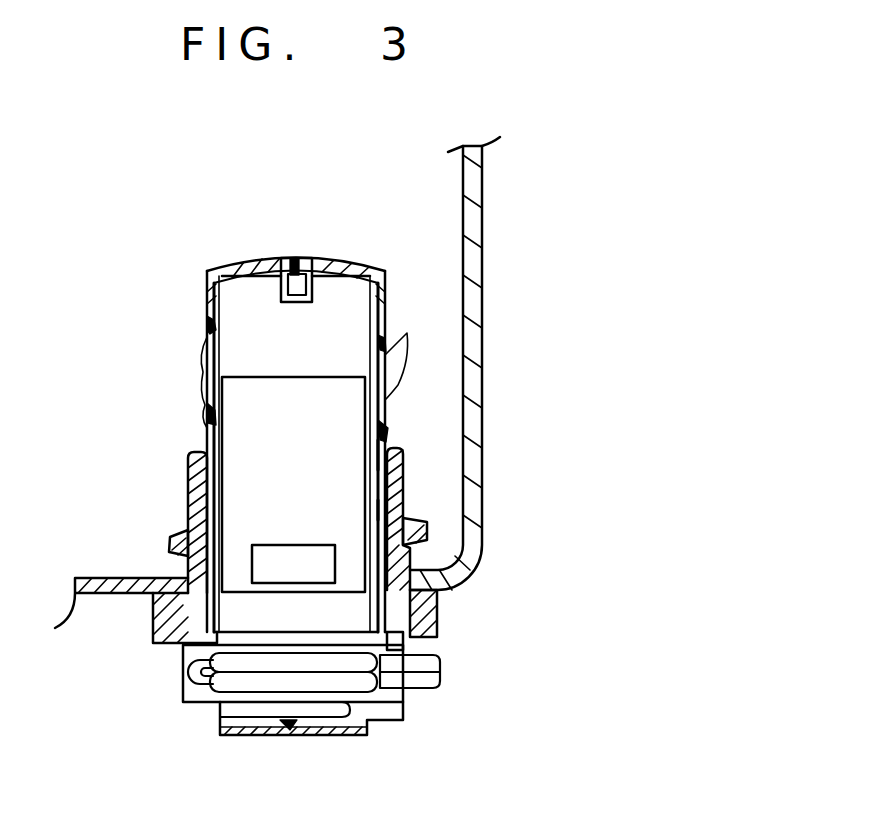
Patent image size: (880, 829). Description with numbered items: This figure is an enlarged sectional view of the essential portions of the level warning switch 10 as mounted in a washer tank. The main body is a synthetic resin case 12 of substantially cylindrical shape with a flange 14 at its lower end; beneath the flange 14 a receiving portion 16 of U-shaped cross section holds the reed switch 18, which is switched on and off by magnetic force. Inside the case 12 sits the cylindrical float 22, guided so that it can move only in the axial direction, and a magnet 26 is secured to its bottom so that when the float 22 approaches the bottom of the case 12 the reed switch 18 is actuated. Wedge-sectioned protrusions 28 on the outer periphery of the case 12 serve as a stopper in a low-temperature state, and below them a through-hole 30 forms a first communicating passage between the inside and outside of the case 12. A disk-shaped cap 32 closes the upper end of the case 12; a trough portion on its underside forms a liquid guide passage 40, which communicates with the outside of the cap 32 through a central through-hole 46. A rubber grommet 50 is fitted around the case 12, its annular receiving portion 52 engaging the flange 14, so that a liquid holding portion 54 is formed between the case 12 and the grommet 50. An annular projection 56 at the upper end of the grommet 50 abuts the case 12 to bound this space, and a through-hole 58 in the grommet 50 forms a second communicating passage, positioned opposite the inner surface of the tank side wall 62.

The level warning switch 10 is at (116, 238).
The case 12 is at (207, 322).
The flange 14 is at (173, 643).
The receiving portion 16 is at (243, 735).
The reed switch 18 is at (197, 703).
The float 22 is at (333, 377).
The magnet 26 is at (338, 583).
The protrusions 28 is at (207, 368).
The through-hole 30 is at (190, 507).
The cap 32 is at (268, 258).
The liquid guide passage 40 is at (305, 290).
The through-hole 46 is at (298, 258).
The grommet 50 is at (397, 456).
The receiving portion 52 is at (153, 623).
The liquid holding portion 54 is at (192, 477).
The annular projection 56 is at (383, 458).
The through-hole 58 is at (382, 510).
The side wall 62 is at (483, 262).